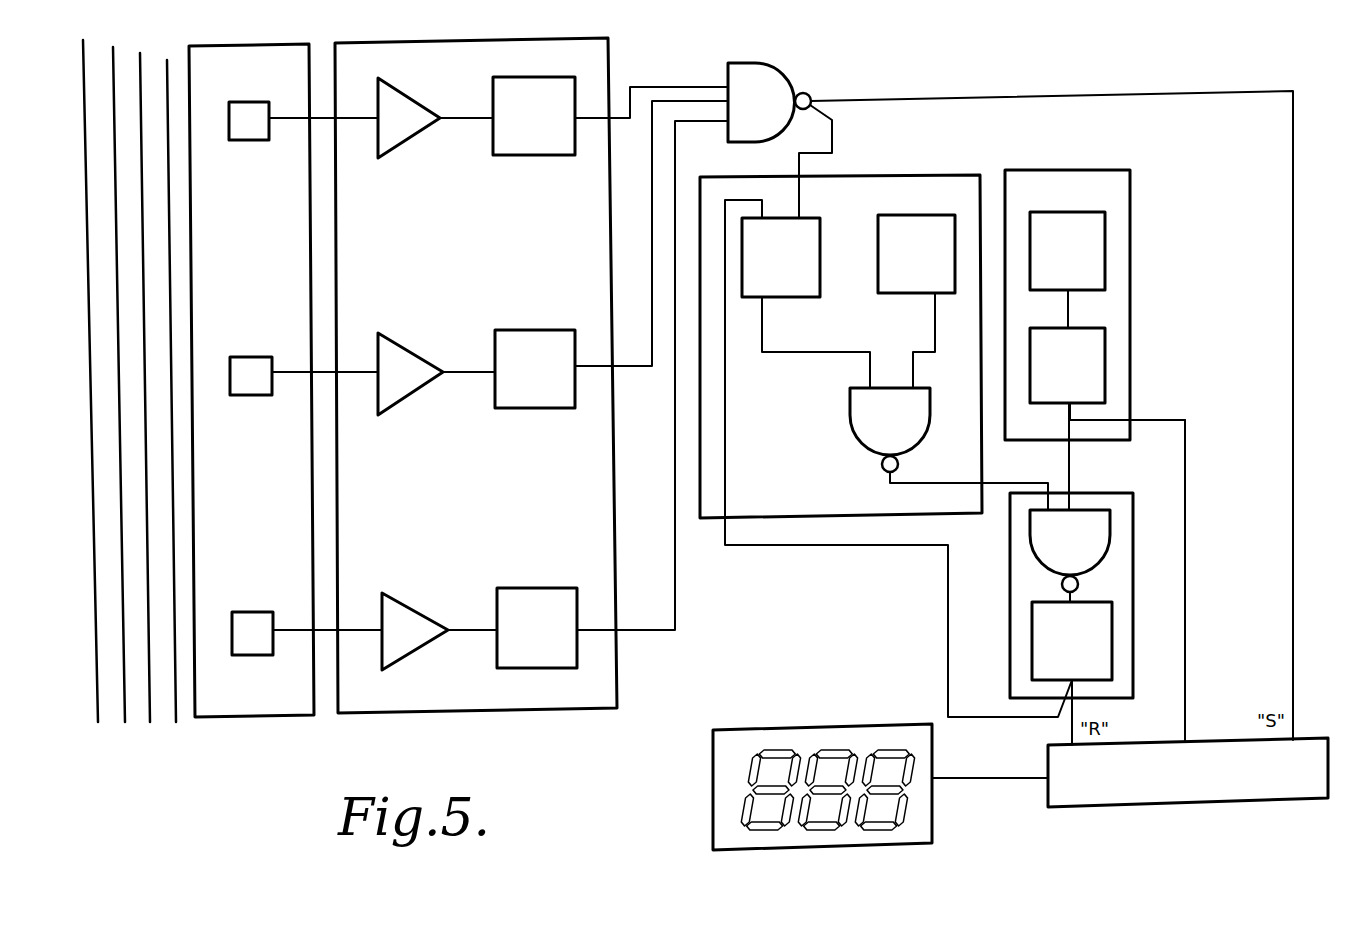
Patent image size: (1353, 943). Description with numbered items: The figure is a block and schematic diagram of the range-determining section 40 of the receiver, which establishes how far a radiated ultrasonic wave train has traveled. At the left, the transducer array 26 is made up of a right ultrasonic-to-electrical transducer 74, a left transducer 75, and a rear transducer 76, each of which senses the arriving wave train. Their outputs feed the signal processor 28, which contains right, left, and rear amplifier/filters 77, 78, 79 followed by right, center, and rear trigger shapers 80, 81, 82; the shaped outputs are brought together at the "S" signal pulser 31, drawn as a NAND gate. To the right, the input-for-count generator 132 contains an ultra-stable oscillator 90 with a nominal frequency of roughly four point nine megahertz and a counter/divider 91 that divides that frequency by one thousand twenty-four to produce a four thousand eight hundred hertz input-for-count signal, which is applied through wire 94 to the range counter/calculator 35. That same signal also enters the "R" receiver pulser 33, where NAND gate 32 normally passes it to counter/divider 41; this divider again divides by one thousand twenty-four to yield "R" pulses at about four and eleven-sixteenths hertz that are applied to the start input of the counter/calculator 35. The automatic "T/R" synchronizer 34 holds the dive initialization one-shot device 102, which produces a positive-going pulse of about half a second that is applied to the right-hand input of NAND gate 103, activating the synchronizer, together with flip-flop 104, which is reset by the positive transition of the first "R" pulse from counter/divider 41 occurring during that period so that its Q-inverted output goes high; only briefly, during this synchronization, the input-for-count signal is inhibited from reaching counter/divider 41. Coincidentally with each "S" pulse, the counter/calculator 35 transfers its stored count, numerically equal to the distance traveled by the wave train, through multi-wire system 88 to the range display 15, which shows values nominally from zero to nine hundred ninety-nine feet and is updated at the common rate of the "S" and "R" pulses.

The range display 15 is at (803, 730).
The transducer array 26 is at (222, 716).
The signal processor 28 is at (427, 714).
The "S" signal pulser 31 is at (760, 80).
The NAND gate 32 is at (1100, 525).
The "R" receiver pulser 33 is at (1133, 583).
The automatic "T/R" synchronizer 34 is at (922, 175).
The range counter/calculator 35 is at (1240, 790).
The range-determining section 40 is at (1118, 82).
The counter/divider 41 is at (1100, 640).
The right ultrasonic-to-electrical transducer 74 is at (253, 141).
The left ultrasonic-to-electrical transducer 75 is at (243, 394).
The rear ultrasonic-to-electrical transducer 76 is at (253, 617).
The right amplifier/filter 77 is at (393, 142).
The left amplifier/filter 78 is at (393, 398).
The rear amplifier/filter 79 is at (408, 612).
The right trigger shaper 80 is at (533, 153).
The center trigger shaper 81 is at (528, 408).
The rear trigger shaper 82 is at (545, 590).
The multi-wire system 88 is at (992, 782).
The ultra-stable oscillator 90 is at (1097, 238).
The counter/divider 91 is at (1097, 358).
The wire 94 is at (1185, 432).
The dive initialization one-shot device 102 is at (912, 294).
The NAND gate 103 is at (866, 408).
The flip-flop 104 is at (783, 297).
The input-for-count generator 132 is at (1112, 148).